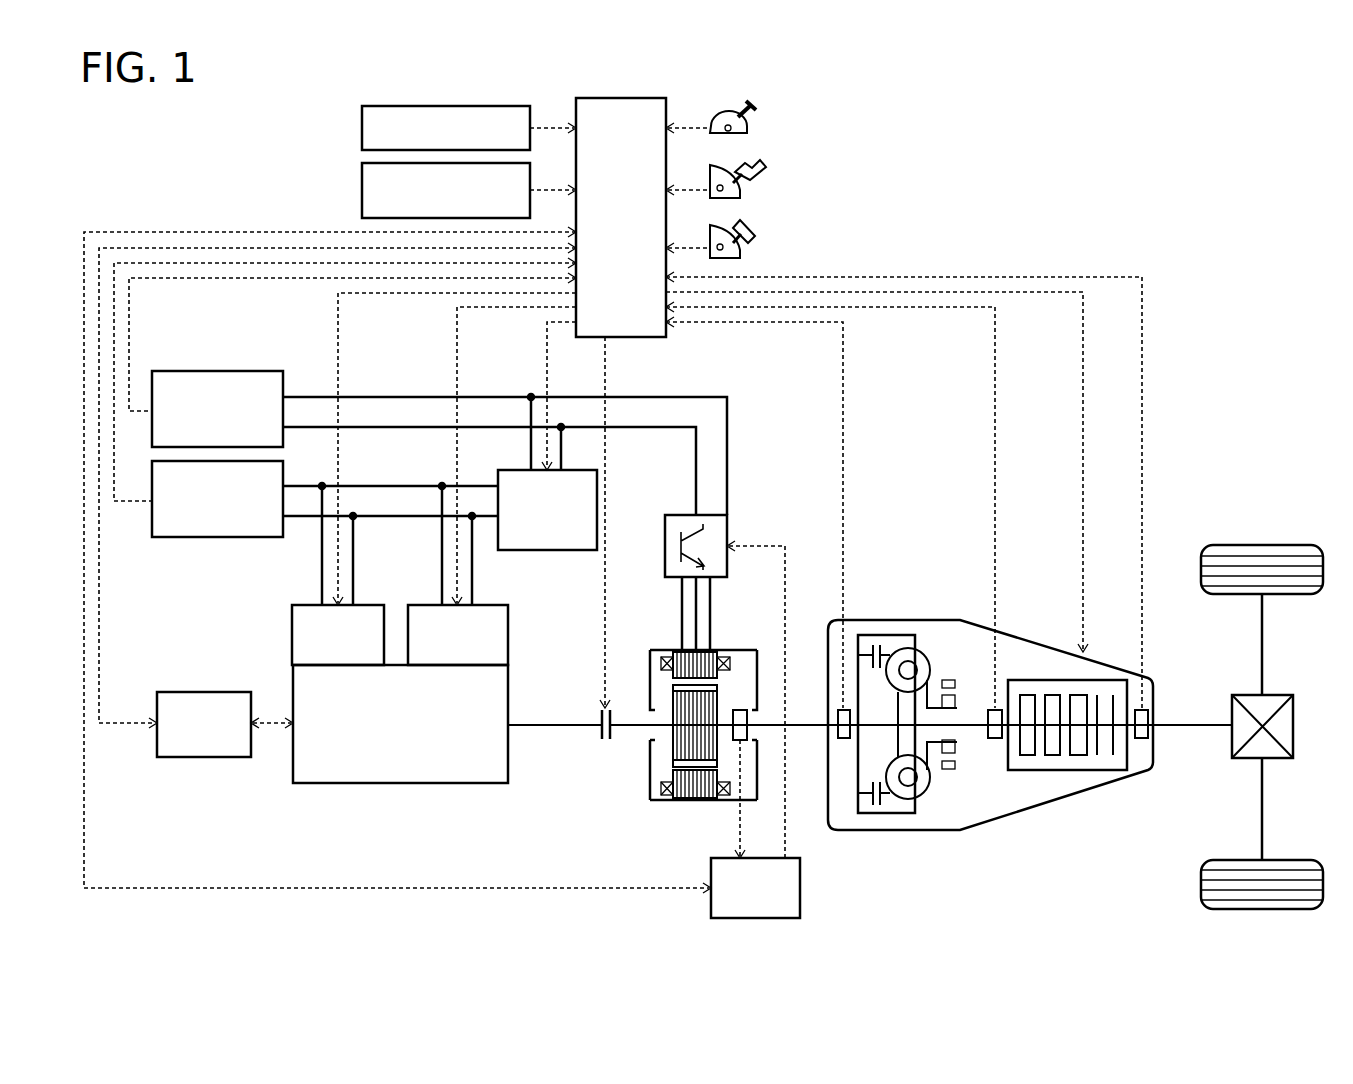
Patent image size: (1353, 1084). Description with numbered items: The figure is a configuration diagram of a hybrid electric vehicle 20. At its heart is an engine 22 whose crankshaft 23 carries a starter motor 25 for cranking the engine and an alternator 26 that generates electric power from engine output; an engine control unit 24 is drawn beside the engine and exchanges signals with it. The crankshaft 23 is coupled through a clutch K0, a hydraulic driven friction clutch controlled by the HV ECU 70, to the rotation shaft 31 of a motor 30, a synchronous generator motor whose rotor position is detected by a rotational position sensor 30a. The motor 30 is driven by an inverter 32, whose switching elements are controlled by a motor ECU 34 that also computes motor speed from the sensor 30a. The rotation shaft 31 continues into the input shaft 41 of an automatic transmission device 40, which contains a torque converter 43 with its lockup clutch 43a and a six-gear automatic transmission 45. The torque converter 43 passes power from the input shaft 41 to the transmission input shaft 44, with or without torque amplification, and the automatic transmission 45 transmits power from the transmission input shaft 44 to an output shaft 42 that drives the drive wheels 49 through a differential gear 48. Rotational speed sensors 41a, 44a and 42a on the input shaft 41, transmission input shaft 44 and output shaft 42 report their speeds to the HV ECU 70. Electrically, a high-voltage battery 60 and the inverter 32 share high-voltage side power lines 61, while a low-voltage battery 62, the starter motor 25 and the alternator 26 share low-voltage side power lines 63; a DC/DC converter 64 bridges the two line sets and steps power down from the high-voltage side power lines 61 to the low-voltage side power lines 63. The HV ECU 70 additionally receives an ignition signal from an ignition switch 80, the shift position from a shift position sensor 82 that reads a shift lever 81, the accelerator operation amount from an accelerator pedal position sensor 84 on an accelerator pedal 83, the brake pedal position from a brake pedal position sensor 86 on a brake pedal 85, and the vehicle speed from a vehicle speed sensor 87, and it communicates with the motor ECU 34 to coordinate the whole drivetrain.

The hybrid electric vehicle 20 is at (1037, 100).
The engine 22 is at (397, 786).
The crankshaft 23 is at (533, 728).
The engine ECU 24 is at (205, 690).
The starter motor 25 is at (430, 603).
The alternator 26 is at (310, 603).
The motor 30 is at (671, 650).
The rotational position sensor 30a is at (739, 708).
The rotation shaft 31 is at (634, 722).
The inverter 32 is at (673, 513).
The motor ECU 34 is at (802, 895).
The automatic transmission device 40 is at (1038, 646).
The input shaft 41 is at (813, 722).
The rotational speed sensor 41a is at (843, 740).
The output shaft 42 is at (1171, 722).
The rotational speed sensor 42a is at (1143, 740).
The torque converter 43 is at (934, 648).
The lockup clutch 43a is at (880, 648).
The transmission input shaft 44 is at (985, 712).
The rotational speed sensor 44a is at (995, 740).
The automatic transmission 45 is at (1100, 772).
The differential gear 48 is at (1278, 693).
The drive wheels 49 is at (1262, 544).
The high-voltage battery 60 is at (202, 369).
The high-voltage side power lines 61 is at (404, 426).
The low-voltage battery 62 is at (204, 539).
The low-voltage side power lines 63 is at (404, 514).
The DC/DC converter 64 is at (546, 553).
The HV ECU 70 is at (622, 96).
The ignition switch 80 is at (360, 128).
The shift lever 81 is at (757, 110).
The shift position sensor 82 is at (748, 129).
The accelerator pedal 83 is at (765, 168).
The accelerator pedal position sensor 84 is at (742, 188).
The brake pedal 85 is at (756, 235).
The brake pedal position sensor 86 is at (742, 247).
The vehicle speed sensor 87 is at (360, 192).
The clutch K0 is at (614, 736).